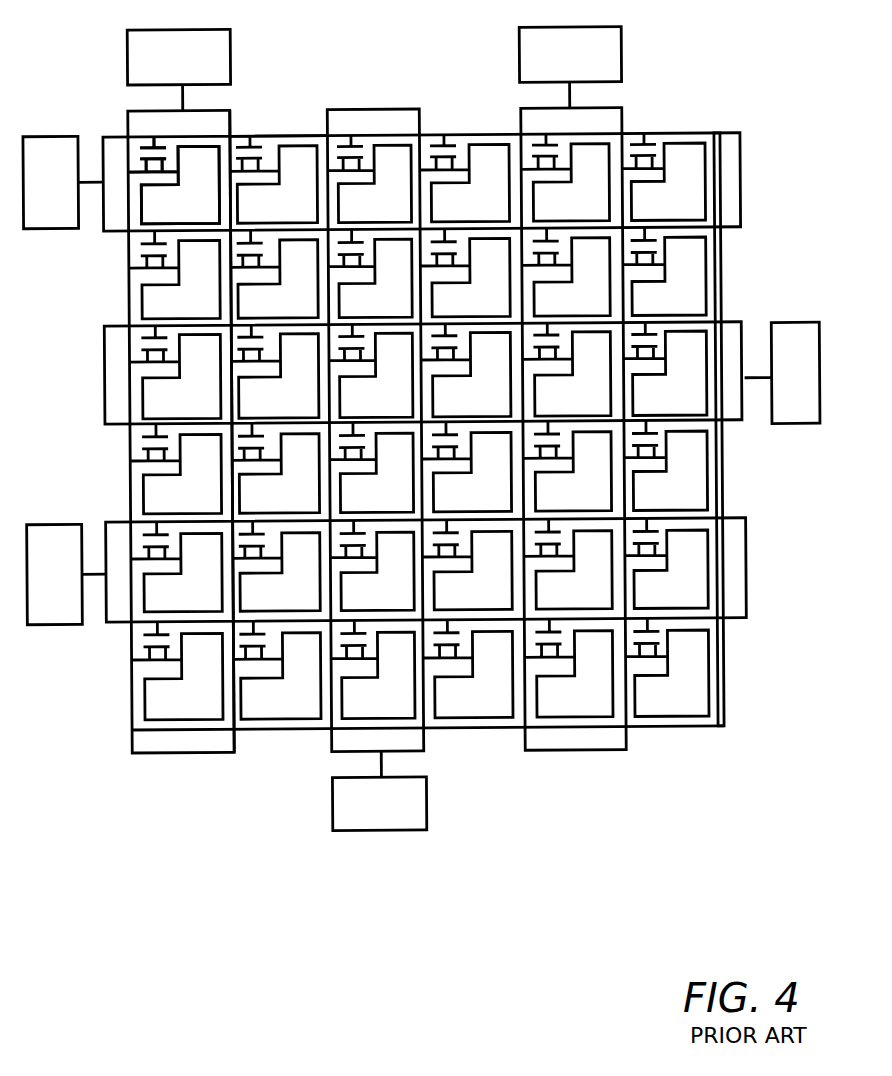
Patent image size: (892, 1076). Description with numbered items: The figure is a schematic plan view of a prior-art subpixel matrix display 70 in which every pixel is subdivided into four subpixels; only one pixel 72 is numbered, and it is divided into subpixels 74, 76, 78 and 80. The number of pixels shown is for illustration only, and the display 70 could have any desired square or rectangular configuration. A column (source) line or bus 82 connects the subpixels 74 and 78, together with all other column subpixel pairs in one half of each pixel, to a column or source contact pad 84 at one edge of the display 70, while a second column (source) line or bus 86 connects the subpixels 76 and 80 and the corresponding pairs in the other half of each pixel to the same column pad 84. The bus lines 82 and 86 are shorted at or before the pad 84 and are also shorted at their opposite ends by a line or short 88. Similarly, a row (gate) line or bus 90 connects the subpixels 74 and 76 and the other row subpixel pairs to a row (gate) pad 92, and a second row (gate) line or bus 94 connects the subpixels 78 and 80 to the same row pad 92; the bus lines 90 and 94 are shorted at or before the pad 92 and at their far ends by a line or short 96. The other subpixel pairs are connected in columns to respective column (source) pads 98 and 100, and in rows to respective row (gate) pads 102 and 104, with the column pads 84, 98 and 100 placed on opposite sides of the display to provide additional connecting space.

The subpixel matrix display 70 is at (640, 84).
The pixel 72 is at (254, 123).
The subpixel 74 is at (174, 180).
The subpixel 76 is at (274, 180).
The subpixel 78 is at (175, 274).
The subpixel 80 is at (275, 274).
The column line or bus 82 is at (129, 307).
The column contact pad 84 is at (179, 70).
The second column line or bus 86 is at (234, 112).
The line or short 88 is at (153, 752).
The row line or bus 90 is at (307, 134).
The row pad 92 is at (63, 182).
The second row line or bus 94 is at (117, 229).
The line or short 96 is at (742, 162).
The column pad 98 is at (379, 791).
The column pad 100 is at (570, 68).
The row pad 102 is at (782, 373).
The row pad 104 is at (67, 574).